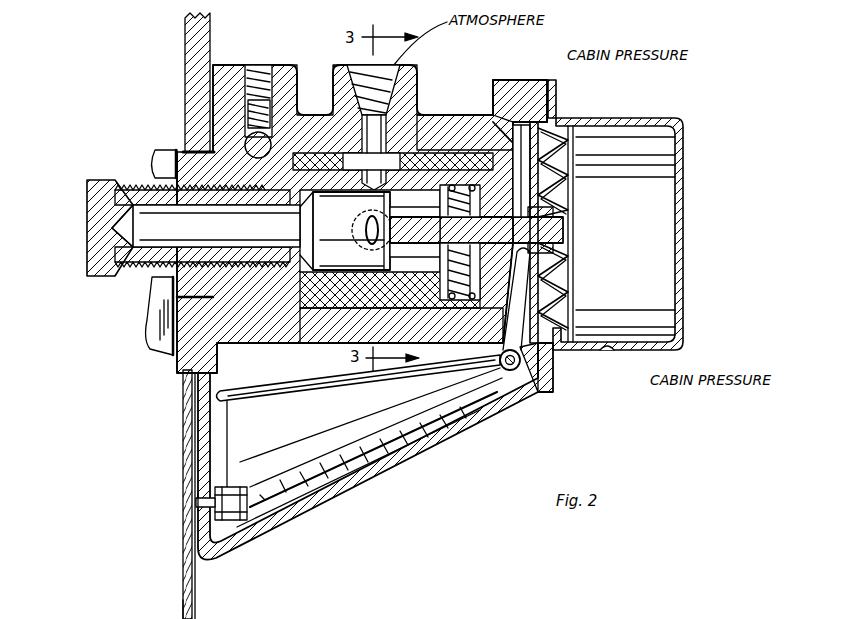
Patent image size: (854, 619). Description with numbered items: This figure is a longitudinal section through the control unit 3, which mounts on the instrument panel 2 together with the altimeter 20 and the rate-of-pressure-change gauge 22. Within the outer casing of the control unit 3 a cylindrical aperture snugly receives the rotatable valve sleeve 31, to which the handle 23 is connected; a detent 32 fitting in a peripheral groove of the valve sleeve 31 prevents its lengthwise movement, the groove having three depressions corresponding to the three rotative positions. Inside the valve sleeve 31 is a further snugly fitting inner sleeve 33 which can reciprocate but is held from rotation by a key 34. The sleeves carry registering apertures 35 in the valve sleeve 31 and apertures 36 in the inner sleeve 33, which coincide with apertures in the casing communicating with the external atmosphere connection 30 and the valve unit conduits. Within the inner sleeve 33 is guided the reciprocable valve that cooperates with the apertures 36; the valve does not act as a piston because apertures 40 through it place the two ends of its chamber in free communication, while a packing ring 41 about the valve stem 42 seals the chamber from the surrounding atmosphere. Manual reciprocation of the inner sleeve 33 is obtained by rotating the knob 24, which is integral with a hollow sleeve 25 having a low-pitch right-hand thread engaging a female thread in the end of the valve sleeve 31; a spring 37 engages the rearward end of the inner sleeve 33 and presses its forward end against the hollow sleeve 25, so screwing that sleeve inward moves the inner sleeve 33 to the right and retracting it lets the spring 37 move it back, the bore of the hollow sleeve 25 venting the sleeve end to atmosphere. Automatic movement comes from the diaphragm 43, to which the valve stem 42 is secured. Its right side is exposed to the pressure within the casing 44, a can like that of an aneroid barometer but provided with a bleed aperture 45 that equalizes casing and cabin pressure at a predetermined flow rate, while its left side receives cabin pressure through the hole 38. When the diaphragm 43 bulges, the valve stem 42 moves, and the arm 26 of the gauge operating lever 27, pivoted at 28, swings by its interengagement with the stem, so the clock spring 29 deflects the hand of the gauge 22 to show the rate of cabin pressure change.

The instrument panel 2 is at (190, 90).
The control unit 3 is at (312, 128).
The altimeter 20 is at (159, 609).
The rate-of-pressure-change gauge 22 is at (186, 550).
The handle 23 is at (150, 332).
The knob 24 is at (100, 178).
The hollow sleeve 25 is at (152, 268).
The arm 26 is at (568, 278).
The gauge operating lever 27 is at (340, 385).
The pivot 28 is at (512, 372).
The clock spring 29 is at (254, 486).
The external atmosphere connection 30 is at (395, 70).
The valve sleeve 31 is at (172, 152).
The detent 32 is at (212, 150).
The inner sleeve 33 is at (290, 231).
The key 34 is at (380, 320).
The apertures 35 is at (417, 135).
The apertures 36 is at (366, 225).
The spring 37 is at (490, 176).
The hole 38 is at (483, 120).
The apertures 40 is at (368, 236).
The packing ring 41 is at (533, 232).
The valve stem 42 is at (565, 232).
The diaphragm 43 is at (572, 180).
The casing 44 is at (680, 176).
The bleed aperture 45 is at (607, 352).